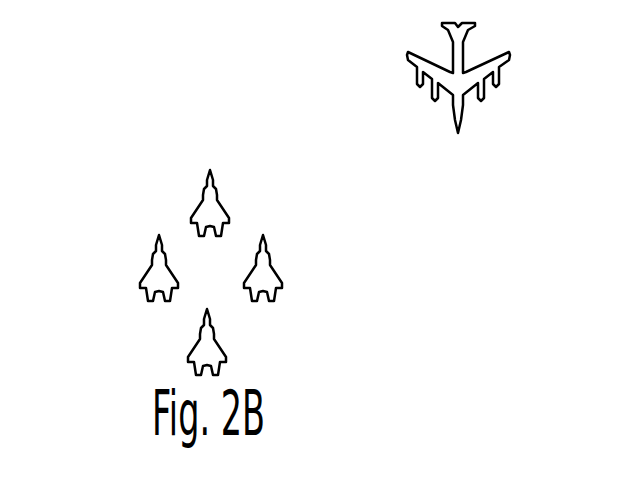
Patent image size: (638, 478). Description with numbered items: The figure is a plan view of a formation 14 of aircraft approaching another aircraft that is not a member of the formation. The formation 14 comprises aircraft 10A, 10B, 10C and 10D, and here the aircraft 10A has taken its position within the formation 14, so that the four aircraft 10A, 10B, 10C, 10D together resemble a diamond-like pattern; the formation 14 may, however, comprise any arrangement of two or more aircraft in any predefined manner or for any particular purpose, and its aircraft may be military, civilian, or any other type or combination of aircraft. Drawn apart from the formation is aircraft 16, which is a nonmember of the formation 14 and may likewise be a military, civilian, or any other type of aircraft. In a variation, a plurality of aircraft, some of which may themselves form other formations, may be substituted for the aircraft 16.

The formation 14 is at (121, 142).
The aircraft 10A is at (220, 345).
The aircraft 10B is at (147, 273).
The aircraft 10C is at (220, 203).
The aircraft 10D is at (274, 271).
The aircraft 16 is at (507, 67).